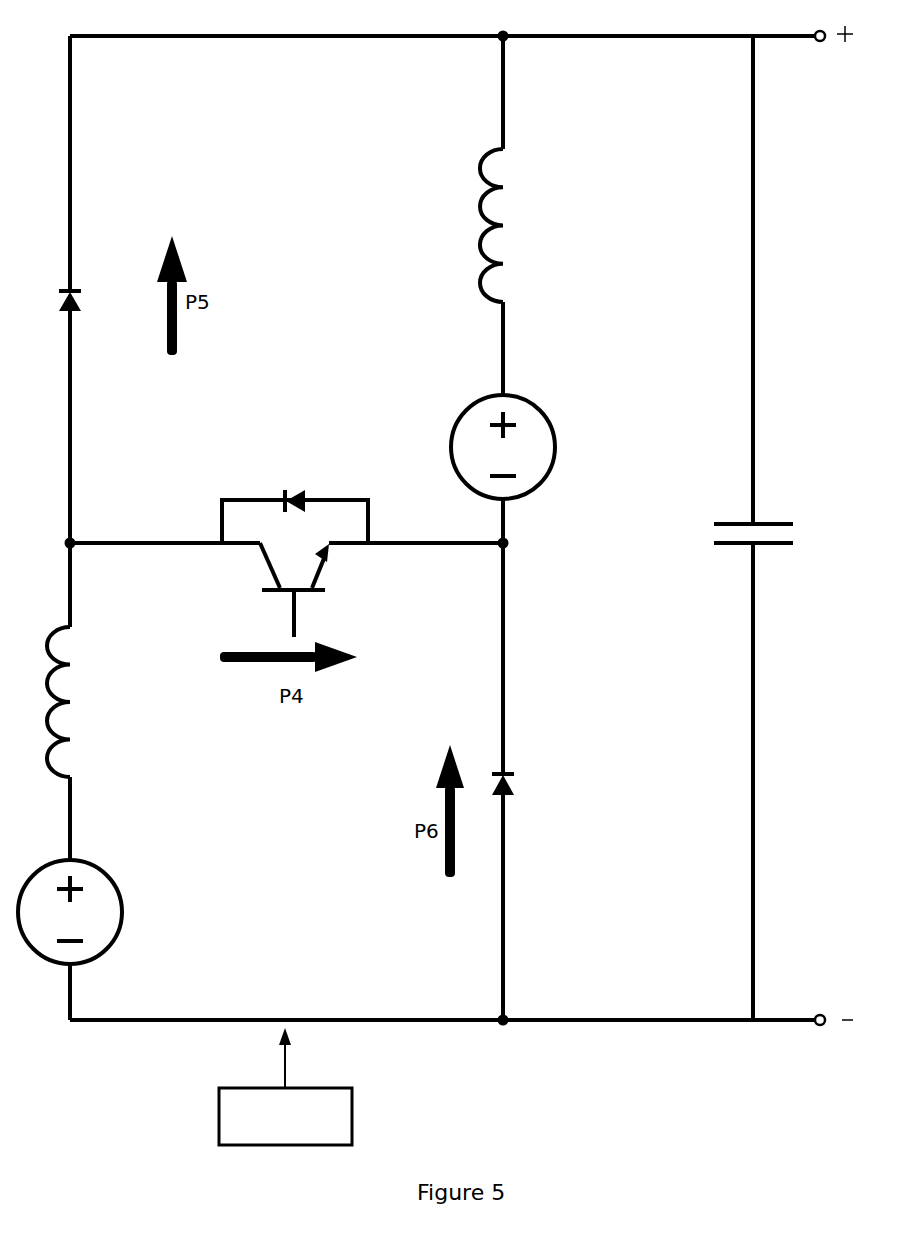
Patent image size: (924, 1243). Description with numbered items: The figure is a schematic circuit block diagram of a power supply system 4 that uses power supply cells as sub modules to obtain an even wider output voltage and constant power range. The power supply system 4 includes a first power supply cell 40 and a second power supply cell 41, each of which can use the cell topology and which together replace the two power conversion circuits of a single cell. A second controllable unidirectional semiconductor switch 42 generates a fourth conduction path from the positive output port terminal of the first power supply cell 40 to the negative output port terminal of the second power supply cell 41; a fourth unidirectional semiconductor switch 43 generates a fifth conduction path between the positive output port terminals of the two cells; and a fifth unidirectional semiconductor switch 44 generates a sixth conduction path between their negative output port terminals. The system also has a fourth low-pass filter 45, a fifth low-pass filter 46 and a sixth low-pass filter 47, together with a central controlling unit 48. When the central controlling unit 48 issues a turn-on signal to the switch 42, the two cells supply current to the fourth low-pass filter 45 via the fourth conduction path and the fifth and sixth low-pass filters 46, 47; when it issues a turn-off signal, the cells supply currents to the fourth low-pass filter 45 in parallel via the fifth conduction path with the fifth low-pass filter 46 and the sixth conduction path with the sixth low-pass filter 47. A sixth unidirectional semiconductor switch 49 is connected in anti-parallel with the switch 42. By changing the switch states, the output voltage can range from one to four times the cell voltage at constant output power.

The power supply system 4 is at (459, 568).
The first power supply cell 40 is at (85, 924).
The second power supply cell 41 is at (458, 447).
The second controllable unidirectional semiconductor switch 42 is at (297, 581).
The fourth unidirectional semiconductor switch 43 is at (78, 304).
The fifth unidirectional semiconductor switch 44 is at (512, 793).
The fourth low-pass filter 45 is at (740, 534).
The fifth low-pass filter 46 is at (63, 690).
The sixth low-pass filter 47 is at (493, 207).
The central controlling unit 48 is at (285, 1086).
The sixth unidirectional semiconductor switch 49 is at (292, 494).